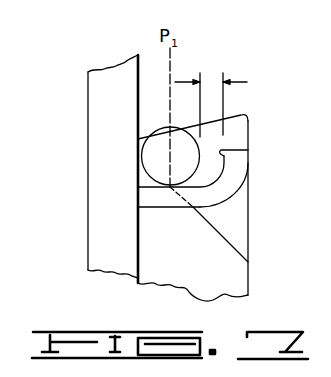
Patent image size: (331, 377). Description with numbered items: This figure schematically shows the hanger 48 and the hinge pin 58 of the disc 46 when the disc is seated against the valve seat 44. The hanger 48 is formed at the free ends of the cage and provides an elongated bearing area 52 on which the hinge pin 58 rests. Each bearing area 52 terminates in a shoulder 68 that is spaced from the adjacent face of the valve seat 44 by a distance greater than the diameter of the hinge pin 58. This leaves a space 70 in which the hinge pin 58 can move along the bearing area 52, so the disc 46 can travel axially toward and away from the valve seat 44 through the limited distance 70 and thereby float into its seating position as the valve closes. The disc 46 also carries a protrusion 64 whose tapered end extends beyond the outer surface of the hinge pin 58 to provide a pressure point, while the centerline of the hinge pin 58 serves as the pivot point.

The valve seat 44 is at (92, 83).
The disc 46 is at (235, 270).
The hanger 48 is at (236, 174).
The bearing area 52 is at (138, 183).
The hinge pin 58 is at (147, 147).
The protrusion 64 is at (235, 133).
The shoulder 68 is at (227, 149).
The space 70 is at (225, 104).